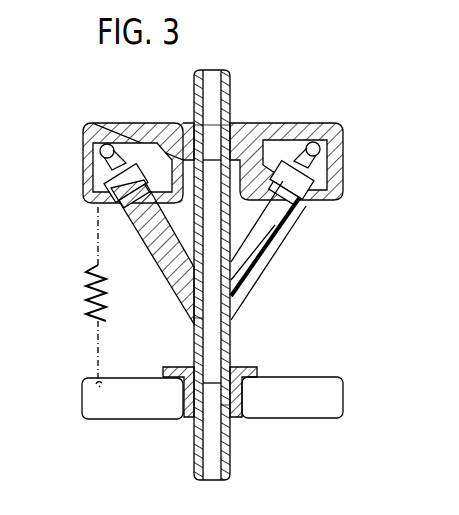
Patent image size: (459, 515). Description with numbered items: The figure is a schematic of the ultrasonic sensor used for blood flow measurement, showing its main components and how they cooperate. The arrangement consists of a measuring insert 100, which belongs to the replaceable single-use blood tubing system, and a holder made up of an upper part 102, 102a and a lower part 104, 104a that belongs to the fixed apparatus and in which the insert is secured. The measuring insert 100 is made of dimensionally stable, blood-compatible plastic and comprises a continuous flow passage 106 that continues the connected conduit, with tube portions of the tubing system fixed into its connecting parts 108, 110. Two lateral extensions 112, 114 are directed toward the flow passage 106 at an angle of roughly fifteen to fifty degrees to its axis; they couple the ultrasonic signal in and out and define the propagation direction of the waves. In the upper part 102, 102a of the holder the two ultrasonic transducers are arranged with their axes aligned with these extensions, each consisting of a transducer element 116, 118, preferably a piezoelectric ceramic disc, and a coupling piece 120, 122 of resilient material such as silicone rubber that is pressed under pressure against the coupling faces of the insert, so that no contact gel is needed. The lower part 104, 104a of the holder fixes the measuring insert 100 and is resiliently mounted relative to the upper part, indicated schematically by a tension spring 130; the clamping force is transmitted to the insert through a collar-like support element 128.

The measuring insert 100 is at (231, 314).
The upper part of the holder 102 is at (152, 123).
The upper part of the holder 102a is at (326, 123).
The lower part of the holder 104 is at (137, 420).
The lower part of the holder 104a is at (311, 410).
The flow passage 106 is at (208, 333).
The connecting part 108 is at (229, 125).
The connecting part 110 is at (233, 407).
The lateral extension 112 is at (262, 256).
The lateral extension 114 is at (155, 246).
The transducer element 116 is at (343, 172).
The transducer element 118 is at (93, 182).
The coupling piece 120 is at (300, 203).
The coupling piece 122 is at (128, 206).
The support element 128 is at (246, 370).
The tension spring 130 is at (84, 317).